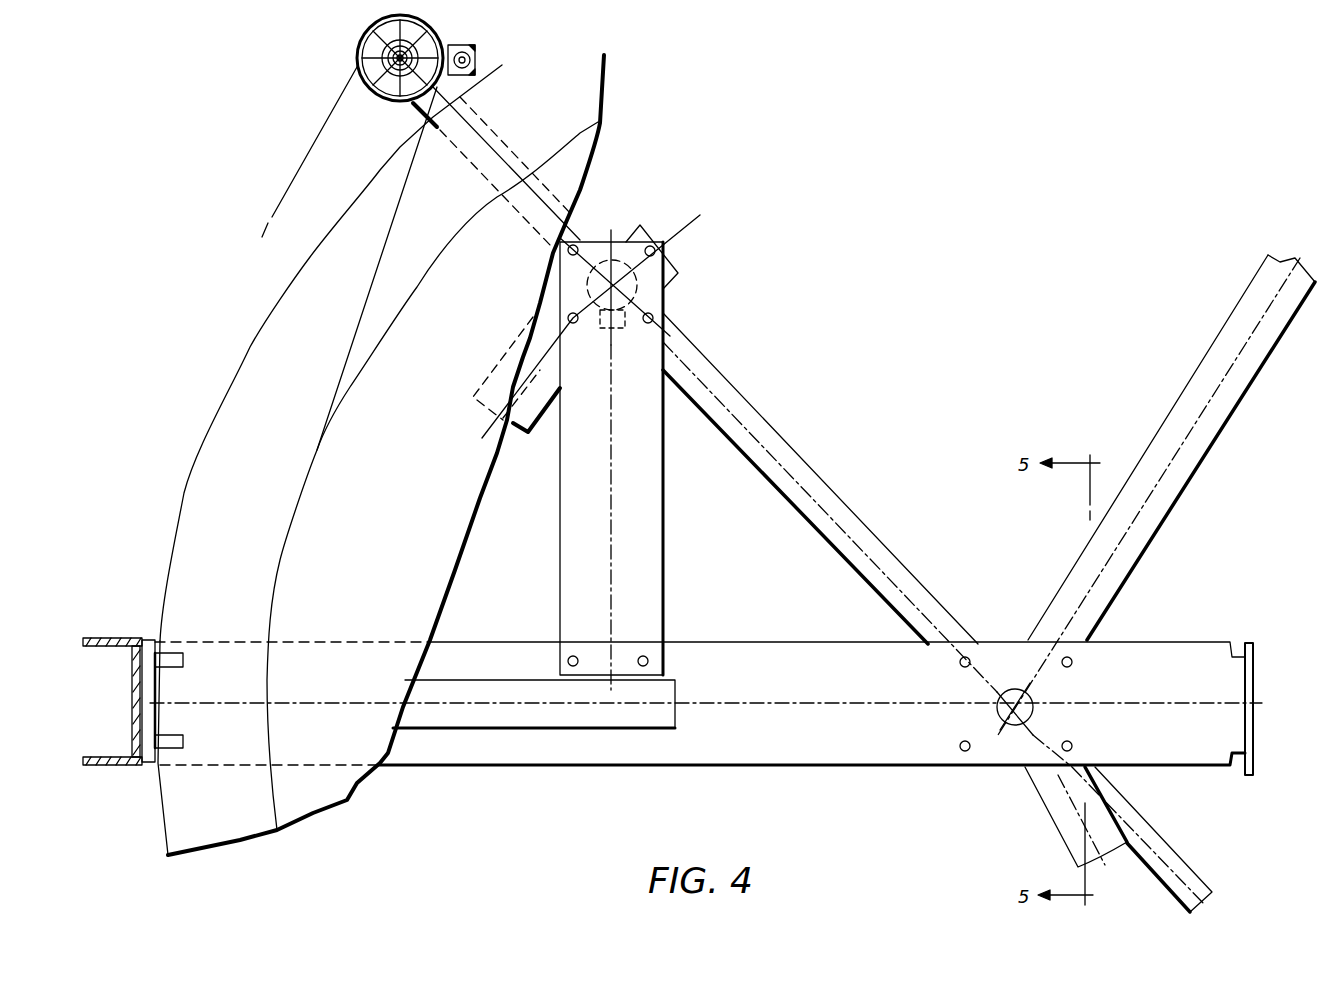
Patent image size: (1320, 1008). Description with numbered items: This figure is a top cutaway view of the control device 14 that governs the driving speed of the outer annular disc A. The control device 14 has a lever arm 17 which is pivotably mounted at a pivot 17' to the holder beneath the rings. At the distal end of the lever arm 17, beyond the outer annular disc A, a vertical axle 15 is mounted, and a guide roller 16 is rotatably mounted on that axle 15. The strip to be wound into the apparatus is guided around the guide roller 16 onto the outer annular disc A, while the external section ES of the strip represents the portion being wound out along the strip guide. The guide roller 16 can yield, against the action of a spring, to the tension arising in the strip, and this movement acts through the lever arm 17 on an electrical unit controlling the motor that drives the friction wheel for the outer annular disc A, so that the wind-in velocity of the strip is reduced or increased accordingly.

The control device 14 is at (640, 207).
The vertical axle 15 is at (362, 58).
The guide roller 16 is at (387, 56).
The lever arm 17 is at (937, 612).
The pivot 17' is at (1016, 673).
The outer annular disc A is at (201, 449).
The external section ES is at (299, 172).